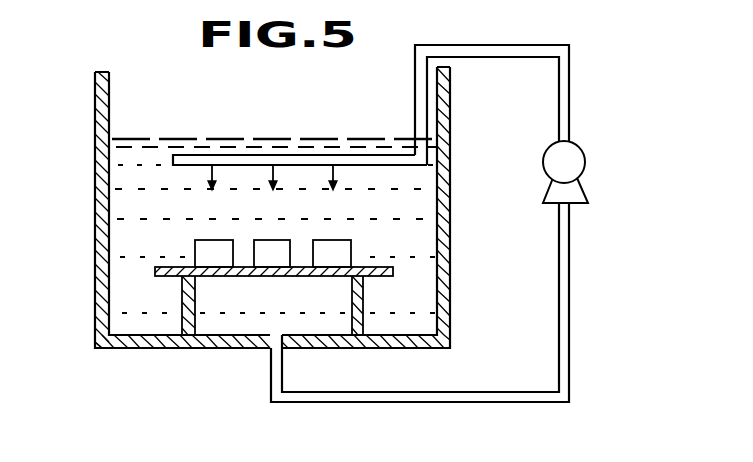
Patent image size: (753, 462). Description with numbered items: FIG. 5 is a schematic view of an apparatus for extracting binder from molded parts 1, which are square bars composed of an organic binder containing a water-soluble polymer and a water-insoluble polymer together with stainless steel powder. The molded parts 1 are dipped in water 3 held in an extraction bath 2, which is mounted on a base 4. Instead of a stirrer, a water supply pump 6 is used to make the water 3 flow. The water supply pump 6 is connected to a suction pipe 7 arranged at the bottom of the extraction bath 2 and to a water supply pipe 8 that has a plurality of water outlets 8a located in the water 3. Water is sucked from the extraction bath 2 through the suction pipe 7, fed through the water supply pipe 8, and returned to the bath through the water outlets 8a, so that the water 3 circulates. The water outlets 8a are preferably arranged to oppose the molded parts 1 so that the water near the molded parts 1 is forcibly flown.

The molded parts 1 is at (205, 240).
The extraction bath 2 is at (105, 160).
The water 3 is at (120, 247).
The base 4 is at (168, 276).
The water supply pump 6 is at (576, 161).
The suction pipe 7 is at (472, 402).
The water supply pipe 8 is at (349, 155).
The water outlets 8a is at (215, 167).